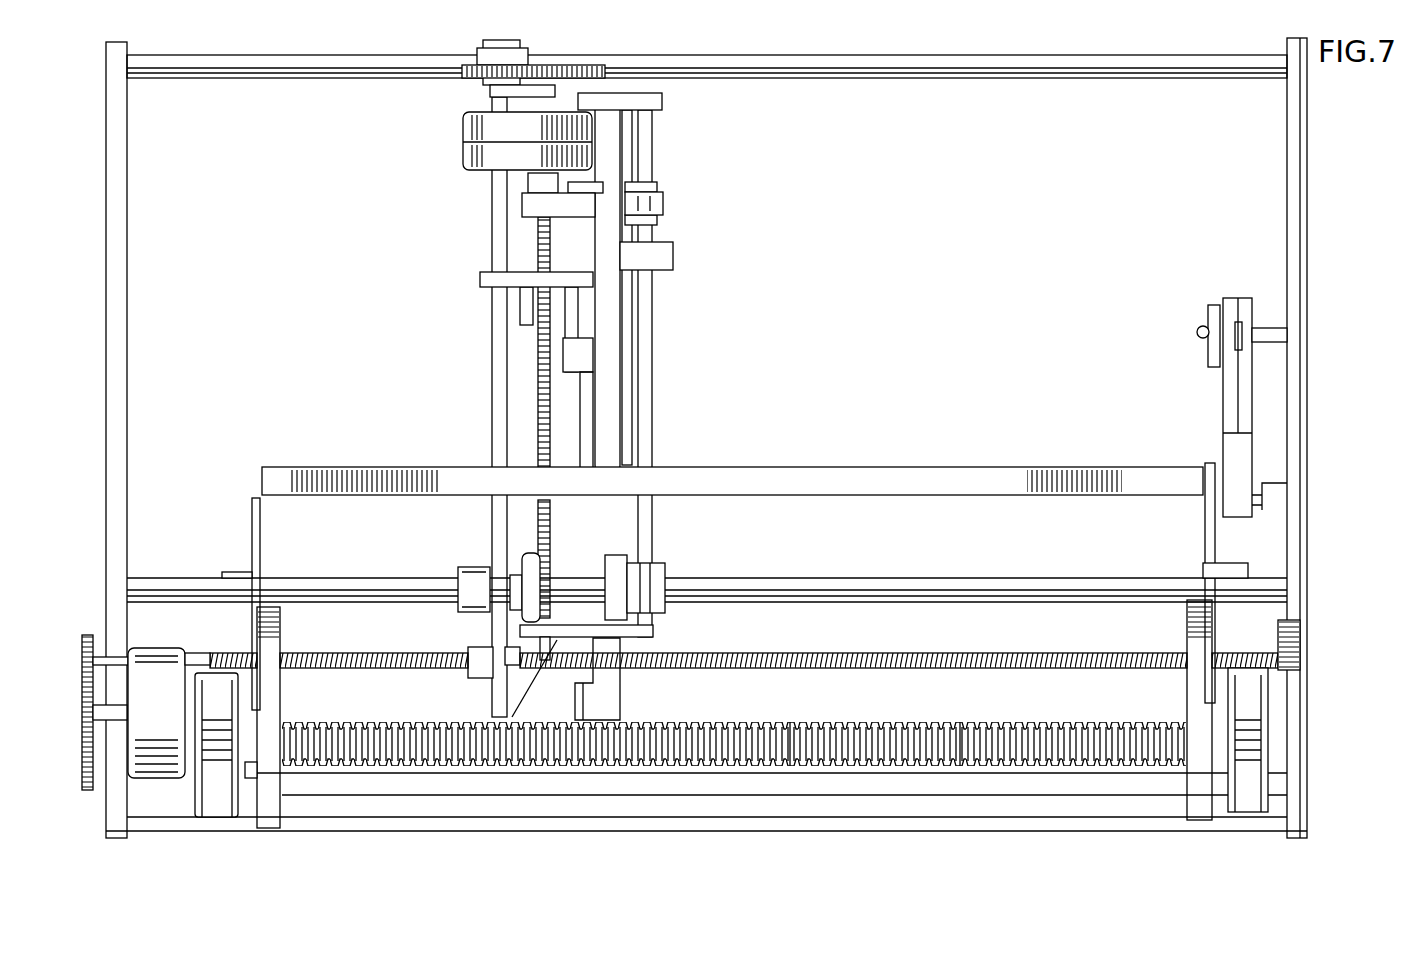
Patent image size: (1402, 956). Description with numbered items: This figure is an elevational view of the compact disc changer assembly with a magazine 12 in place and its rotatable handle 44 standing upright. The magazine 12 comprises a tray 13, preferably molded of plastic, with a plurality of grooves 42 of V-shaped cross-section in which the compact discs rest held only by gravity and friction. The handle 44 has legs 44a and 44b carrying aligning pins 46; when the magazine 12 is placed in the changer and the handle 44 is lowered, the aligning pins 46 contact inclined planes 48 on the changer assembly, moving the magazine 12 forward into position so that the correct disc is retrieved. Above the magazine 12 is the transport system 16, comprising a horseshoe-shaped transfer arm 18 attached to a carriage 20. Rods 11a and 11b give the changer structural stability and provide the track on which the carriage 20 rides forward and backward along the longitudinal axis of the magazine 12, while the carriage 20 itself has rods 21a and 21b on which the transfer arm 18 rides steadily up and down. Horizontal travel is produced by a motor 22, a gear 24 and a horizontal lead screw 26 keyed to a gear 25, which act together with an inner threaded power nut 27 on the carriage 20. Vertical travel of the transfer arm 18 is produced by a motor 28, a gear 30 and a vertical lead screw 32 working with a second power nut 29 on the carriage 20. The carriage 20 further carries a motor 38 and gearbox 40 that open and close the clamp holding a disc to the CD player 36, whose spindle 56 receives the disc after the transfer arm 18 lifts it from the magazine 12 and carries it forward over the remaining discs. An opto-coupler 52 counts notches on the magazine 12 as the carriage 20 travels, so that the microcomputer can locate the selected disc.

The rod 11a is at (905, 78).
The rod 11b is at (920, 578).
The magazine 12 is at (320, 710).
The tray 13 is at (382, 722).
The transport system 16 is at (662, 156).
The transfer arm 18 is at (610, 358).
The carriage 20 is at (666, 101).
The rod 21a is at (653, 392).
The rod 21b is at (492, 377).
The motor 22 is at (165, 650).
The gear 24 is at (90, 792).
The gear 25 is at (88, 635).
The horizontal lead screw 26 is at (897, 653).
The power nut 27 is at (478, 640).
The motor 28 is at (467, 158).
The power nut 29 is at (522, 207).
The gear 30 is at (600, 68).
The vertical lead screw 32 is at (538, 352).
The CD player 36 is at (1242, 298).
The motor 38 is at (666, 203).
The gearbox 40 is at (674, 258).
The grooves 42 is at (795, 720).
The rotatable handle 44 is at (385, 478).
The leg 44a is at (252, 520).
The leg 44b is at (1216, 478).
The aligning pins 46 is at (238, 572).
The inclined planes 48 is at (228, 675).
The opto-coupler 52 is at (606, 707).
The spindle 56 is at (1205, 330).